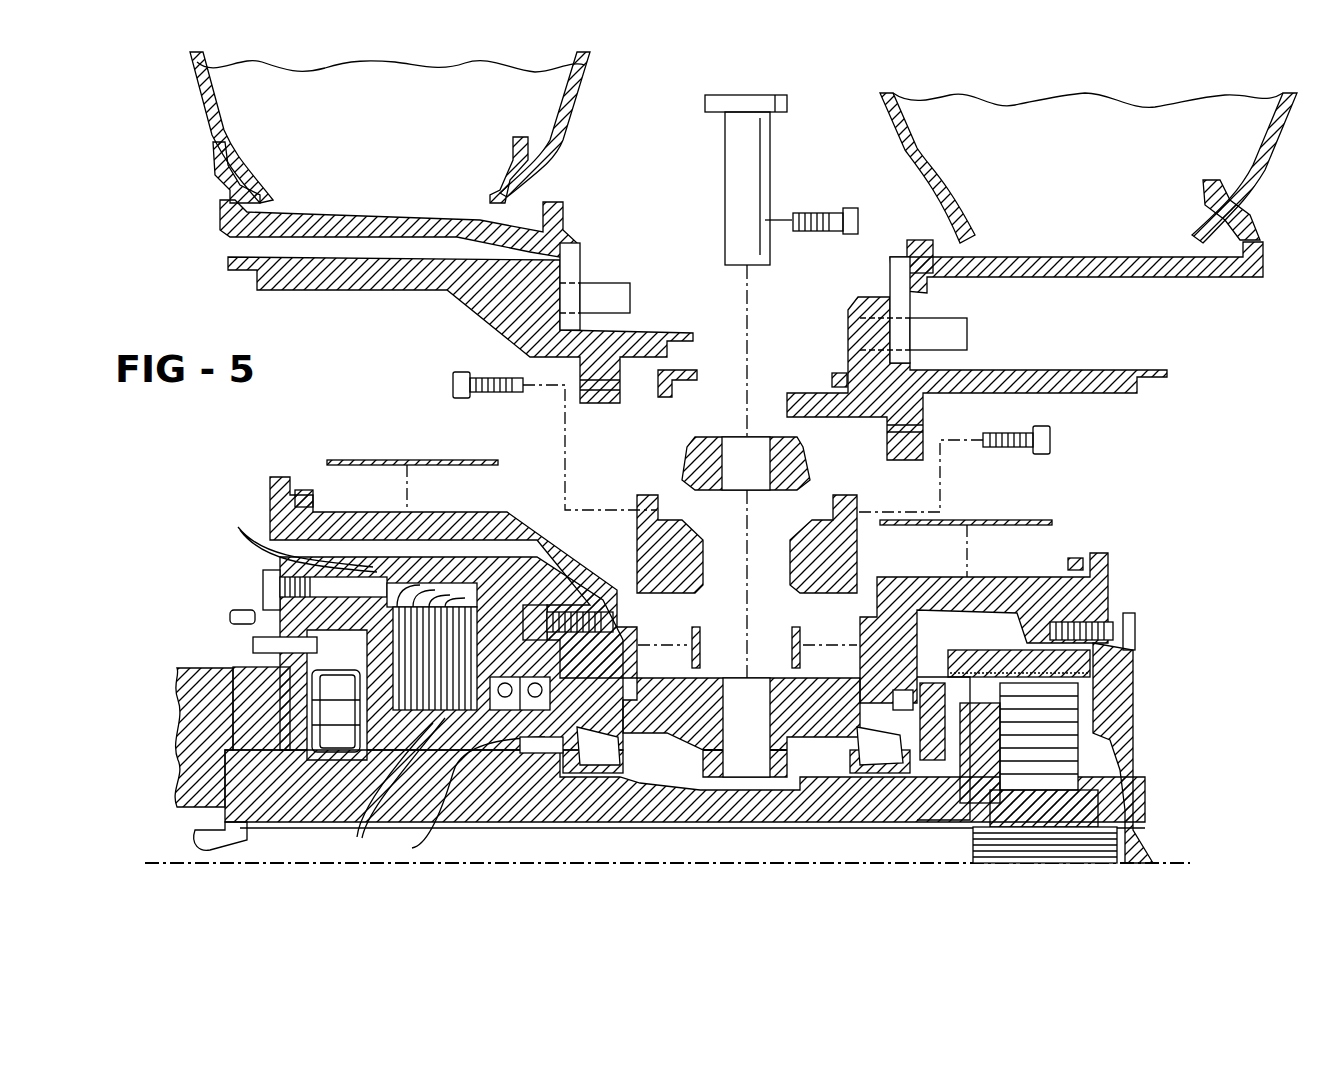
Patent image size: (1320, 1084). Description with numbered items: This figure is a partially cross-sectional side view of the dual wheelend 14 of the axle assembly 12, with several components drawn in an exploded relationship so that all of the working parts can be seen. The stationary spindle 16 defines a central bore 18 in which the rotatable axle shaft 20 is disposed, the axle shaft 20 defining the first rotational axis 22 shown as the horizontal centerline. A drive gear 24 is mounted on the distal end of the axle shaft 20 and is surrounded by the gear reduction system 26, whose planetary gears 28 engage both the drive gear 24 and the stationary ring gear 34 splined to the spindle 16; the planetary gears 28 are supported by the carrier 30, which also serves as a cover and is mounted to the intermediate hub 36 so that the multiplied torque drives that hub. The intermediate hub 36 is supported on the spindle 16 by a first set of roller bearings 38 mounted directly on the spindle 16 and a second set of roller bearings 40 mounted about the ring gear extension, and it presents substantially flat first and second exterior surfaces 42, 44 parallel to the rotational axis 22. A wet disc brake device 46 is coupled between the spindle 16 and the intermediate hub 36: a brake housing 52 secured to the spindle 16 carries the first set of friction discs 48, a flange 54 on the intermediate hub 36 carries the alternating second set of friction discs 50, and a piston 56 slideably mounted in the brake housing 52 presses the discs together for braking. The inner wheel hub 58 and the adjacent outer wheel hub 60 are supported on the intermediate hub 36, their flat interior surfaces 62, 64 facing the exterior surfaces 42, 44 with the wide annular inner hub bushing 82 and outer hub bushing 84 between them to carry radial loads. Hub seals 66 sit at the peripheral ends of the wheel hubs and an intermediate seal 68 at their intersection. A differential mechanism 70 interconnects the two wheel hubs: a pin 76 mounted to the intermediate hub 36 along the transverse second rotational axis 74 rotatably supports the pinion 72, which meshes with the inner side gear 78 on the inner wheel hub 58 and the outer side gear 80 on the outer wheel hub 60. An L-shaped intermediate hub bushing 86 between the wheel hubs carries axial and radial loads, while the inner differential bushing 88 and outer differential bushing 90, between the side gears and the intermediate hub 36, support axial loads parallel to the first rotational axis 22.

The axle assembly 12 is at (268, 877).
The dual wheelend 14 is at (262, 462).
The stationary spindle 16 is at (317, 803).
The central bore 18 is at (195, 833).
The axle shaft 20 is at (473, 848).
The rotational axis 22 is at (810, 865).
The drive gear 24 is at (1073, 817).
The gear reduction system 26 is at (1088, 756).
The planetary gears 28 is at (1053, 773).
The carrier 30 is at (1112, 697).
The stationary ring gear 34 is at (1050, 662).
The intermediate hub 36 is at (1100, 568).
The first set of roller bearings 38 is at (583, 750).
The second set of roller bearings 40 is at (870, 750).
The first exterior surface 42 is at (470, 512).
The second exterior surface 44 is at (1035, 577).
The wet disc brake device 46 is at (243, 647).
The first set of friction discs 48 is at (298, 538).
The second set of friction discs 50 is at (395, 790).
The brake housing 52 is at (510, 570).
The flange 54 is at (465, 799).
The piston 56 is at (367, 643).
The inner wheel hub 58 is at (490, 297).
The outer wheel hub 60 is at (993, 375).
The interior surface 62 is at (320, 292).
The interior surface 64 is at (1065, 393).
The hub seals 66 is at (302, 490).
The intermediate seal 68 is at (838, 373).
The differential mechanism 70 is at (716, 575).
The pinion 72 is at (718, 447).
The second rotational axis 74 is at (750, 297).
The pin 76 is at (757, 162).
The inner side gear 78 is at (660, 543).
The outer side gear 80 is at (823, 543).
The inner hub bushing 82 is at (360, 460).
The outer hub bushing 84 is at (977, 520).
The intermediate hub bushing 86 is at (677, 370).
The inner differential bushing 88 is at (688, 637).
The outer differential bushing 90 is at (798, 640).